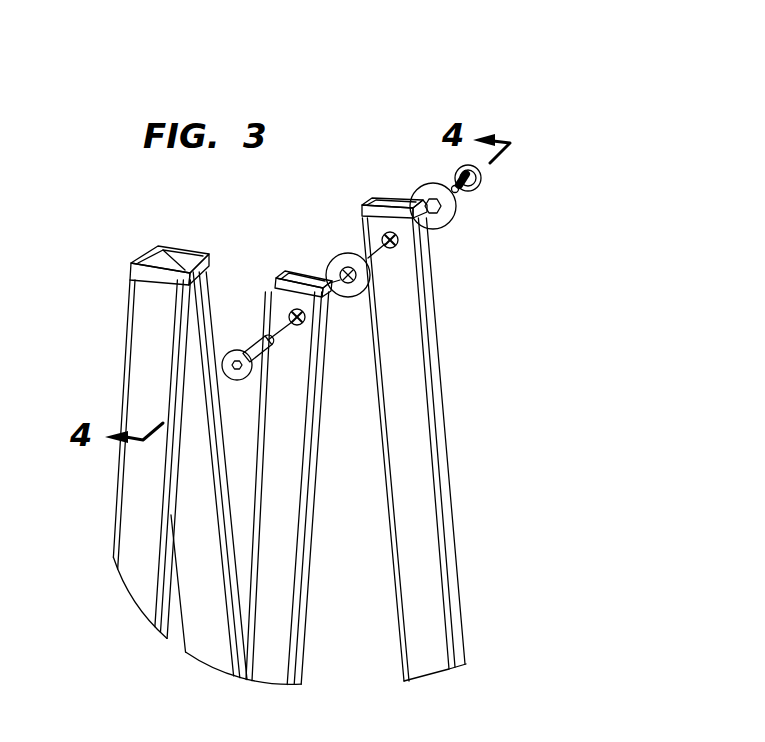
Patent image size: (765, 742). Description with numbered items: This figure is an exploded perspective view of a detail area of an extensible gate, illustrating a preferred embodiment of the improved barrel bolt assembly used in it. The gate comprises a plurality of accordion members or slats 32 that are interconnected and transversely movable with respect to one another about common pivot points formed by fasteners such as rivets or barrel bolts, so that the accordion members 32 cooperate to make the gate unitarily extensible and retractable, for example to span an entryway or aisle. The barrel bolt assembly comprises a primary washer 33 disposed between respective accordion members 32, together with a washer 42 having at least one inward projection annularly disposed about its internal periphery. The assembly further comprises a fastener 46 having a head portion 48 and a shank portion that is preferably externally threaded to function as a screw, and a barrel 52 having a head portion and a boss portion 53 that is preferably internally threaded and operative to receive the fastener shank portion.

The accordion member 32 is at (432, 385).
The primary washer 33 is at (337, 250).
The washer 42 is at (436, 224).
The fastener 46 is at (492, 198).
The head portion 48 is at (456, 172).
The barrel 52 is at (241, 330).
The boss portion 53 is at (254, 354).